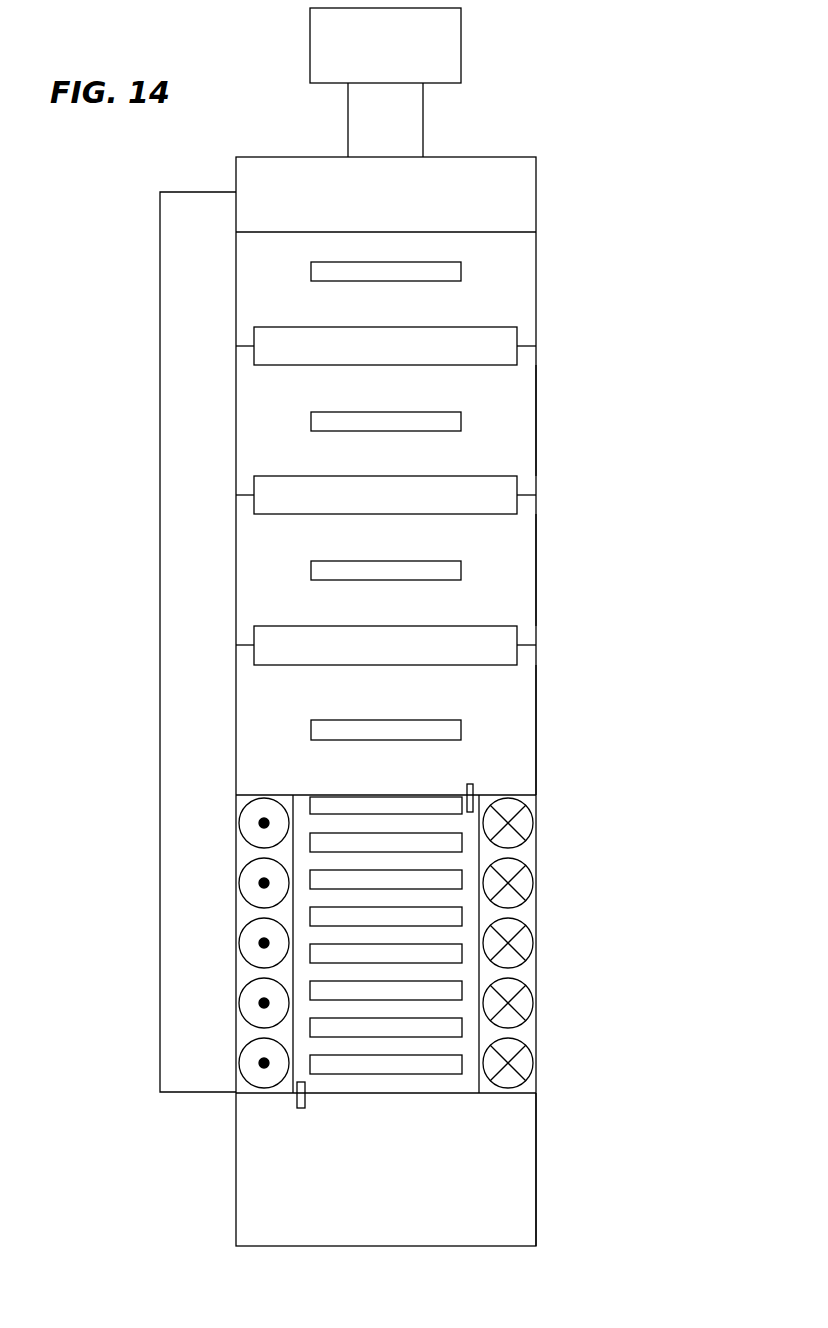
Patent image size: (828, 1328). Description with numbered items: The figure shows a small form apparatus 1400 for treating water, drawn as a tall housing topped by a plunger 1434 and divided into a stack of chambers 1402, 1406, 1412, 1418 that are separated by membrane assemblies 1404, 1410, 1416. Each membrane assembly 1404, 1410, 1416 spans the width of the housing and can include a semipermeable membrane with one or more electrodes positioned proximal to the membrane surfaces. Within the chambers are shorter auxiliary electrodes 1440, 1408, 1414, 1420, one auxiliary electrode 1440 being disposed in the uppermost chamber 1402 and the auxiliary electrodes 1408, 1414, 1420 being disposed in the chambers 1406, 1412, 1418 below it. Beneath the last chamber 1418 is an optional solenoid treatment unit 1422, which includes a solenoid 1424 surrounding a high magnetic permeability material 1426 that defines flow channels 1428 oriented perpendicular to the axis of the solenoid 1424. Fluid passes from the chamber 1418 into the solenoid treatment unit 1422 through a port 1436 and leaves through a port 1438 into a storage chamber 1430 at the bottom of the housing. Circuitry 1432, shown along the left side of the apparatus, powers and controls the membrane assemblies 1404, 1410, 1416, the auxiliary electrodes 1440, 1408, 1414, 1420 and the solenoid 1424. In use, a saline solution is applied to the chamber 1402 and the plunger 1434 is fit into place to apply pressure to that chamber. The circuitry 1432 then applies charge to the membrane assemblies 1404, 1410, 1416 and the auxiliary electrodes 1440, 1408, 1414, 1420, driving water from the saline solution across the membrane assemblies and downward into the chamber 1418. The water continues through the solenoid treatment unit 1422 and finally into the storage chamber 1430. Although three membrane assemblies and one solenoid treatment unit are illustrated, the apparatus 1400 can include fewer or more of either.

The small form apparatus 1400 is at (593, 127).
The chamber 1402 is at (536, 289).
The membrane assembly 1404 is at (447, 327).
The chamber 1406 is at (536, 421).
The auxiliary electrode 1408 is at (462, 420).
The membrane assembly 1410 is at (452, 476).
The chamber 1412 is at (536, 562).
The auxiliary electrode 1414 is at (462, 561).
The membrane assembly 1416 is at (452, 626).
The chamber 1418 is at (536, 730).
The auxiliary electrode 1420 is at (462, 728).
The solenoid treatment unit 1422 is at (536, 850).
The solenoid 1424 is at (512, 947).
The high magnetic permeability material 1426 is at (426, 1030).
The flow channels 1428 is at (445, 1048).
The storage chamber 1430 is at (536, 1160).
The circuitry 1432 is at (161, 805).
The plunger 1434 is at (461, 45).
The port 1436 is at (475, 793).
The port 1438 is at (300, 1097).
The auxiliary electrode 1440 is at (462, 270).